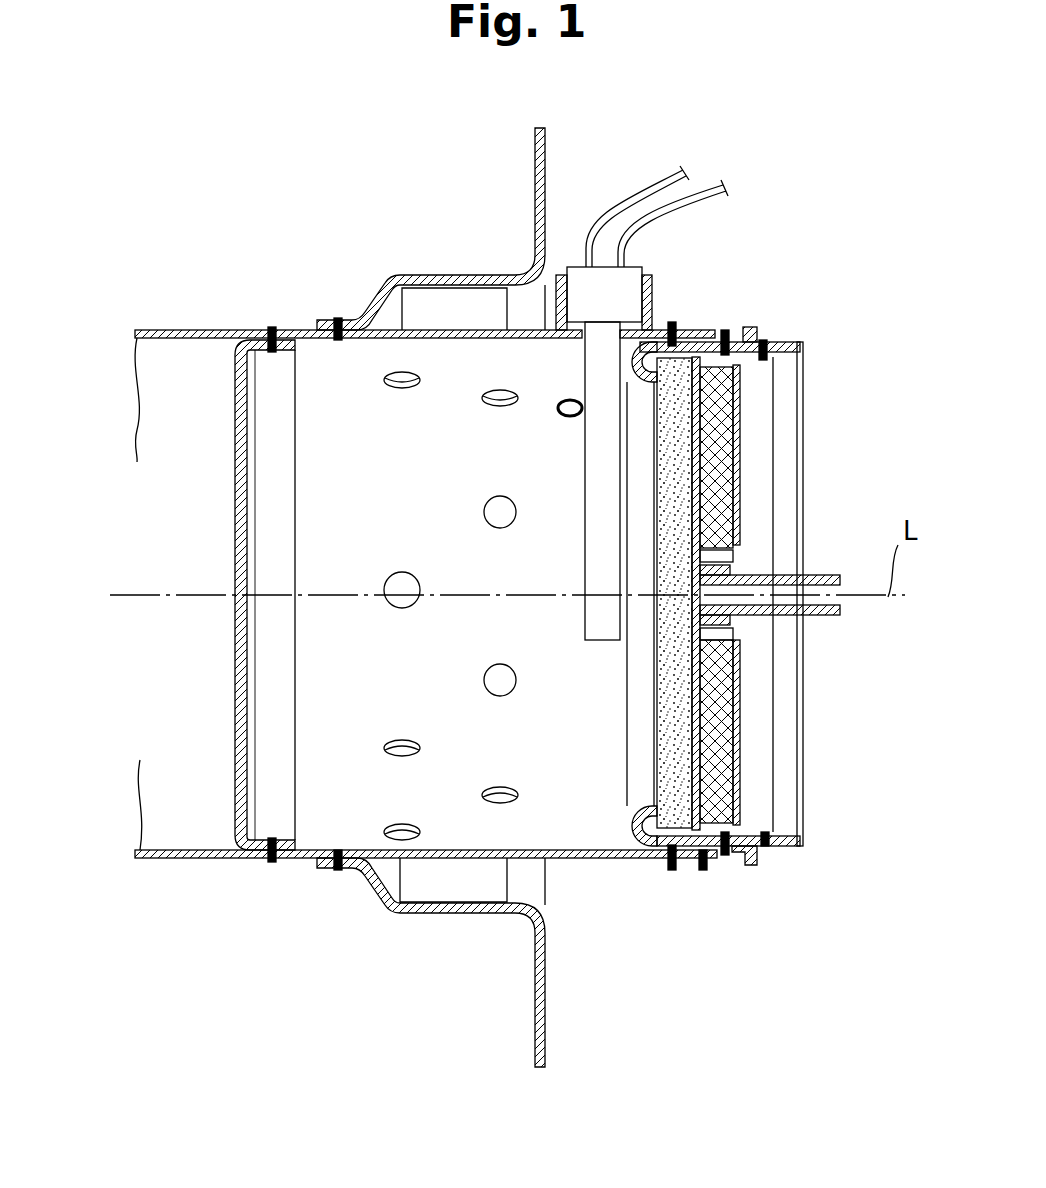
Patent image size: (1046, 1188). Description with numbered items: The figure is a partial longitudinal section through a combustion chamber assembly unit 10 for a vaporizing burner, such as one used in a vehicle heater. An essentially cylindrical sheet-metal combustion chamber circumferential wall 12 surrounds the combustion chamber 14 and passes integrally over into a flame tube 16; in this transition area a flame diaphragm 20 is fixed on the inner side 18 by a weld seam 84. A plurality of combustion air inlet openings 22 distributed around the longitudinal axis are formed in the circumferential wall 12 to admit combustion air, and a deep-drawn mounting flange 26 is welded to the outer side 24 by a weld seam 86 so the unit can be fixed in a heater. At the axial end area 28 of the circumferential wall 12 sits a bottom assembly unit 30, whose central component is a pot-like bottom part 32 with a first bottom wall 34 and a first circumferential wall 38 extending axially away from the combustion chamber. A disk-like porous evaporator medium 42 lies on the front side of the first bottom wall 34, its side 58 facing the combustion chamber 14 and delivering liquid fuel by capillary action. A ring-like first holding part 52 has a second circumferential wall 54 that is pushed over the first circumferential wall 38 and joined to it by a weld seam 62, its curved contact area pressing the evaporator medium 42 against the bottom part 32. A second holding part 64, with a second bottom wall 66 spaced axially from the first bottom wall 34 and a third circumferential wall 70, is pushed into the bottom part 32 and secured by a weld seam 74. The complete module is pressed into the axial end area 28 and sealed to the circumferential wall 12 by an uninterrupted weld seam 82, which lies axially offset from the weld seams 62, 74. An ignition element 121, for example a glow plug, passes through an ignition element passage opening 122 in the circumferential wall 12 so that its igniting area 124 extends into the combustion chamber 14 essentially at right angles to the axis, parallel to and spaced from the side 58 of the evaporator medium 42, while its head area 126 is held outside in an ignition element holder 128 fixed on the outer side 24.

The combustion chamber assembly unit 10 is at (350, 990).
The combustion chamber circumferential wall 12 is at (300, 860).
The combustion chamber 14 is at (323, 405).
The flame tube 16 is at (175, 330).
The inner side 18 is at (172, 846).
The flame diaphragm 20 is at (237, 410).
The combustion air inlet openings 22 is at (425, 850).
The outer side 24 is at (280, 860).
The mounting flange 26 is at (535, 153).
The axial end area 28 is at (672, 870).
The bottom assembly unit 30 is at (780, 316).
The bottom part 32 is at (708, 414).
The first bottom wall 34 is at (700, 477).
The first circumferential wall 38 is at (788, 844).
The porous evaporator medium 42 is at (655, 770).
The first holding part 52 is at (715, 870).
The second circumferential wall 54 is at (725, 855).
The side of the porous evaporator medium 58 is at (655, 680).
The weld seam 62 is at (723, 340).
The second holding part 64 is at (778, 672).
The second bottom wall 66 is at (738, 718).
The third circumferential wall 70 is at (745, 824).
The weld seam 74 is at (767, 337).
The weld seam 82 is at (670, 330).
The weld seam 84 is at (267, 860).
The weld seam 86 is at (338, 325).
The ignition element 121 is at (568, 250).
The ignition element passage opening 122 is at (563, 357).
The igniting area 124 is at (600, 492).
The head area 126 is at (600, 283).
The ignition element holder 128 is at (650, 275).